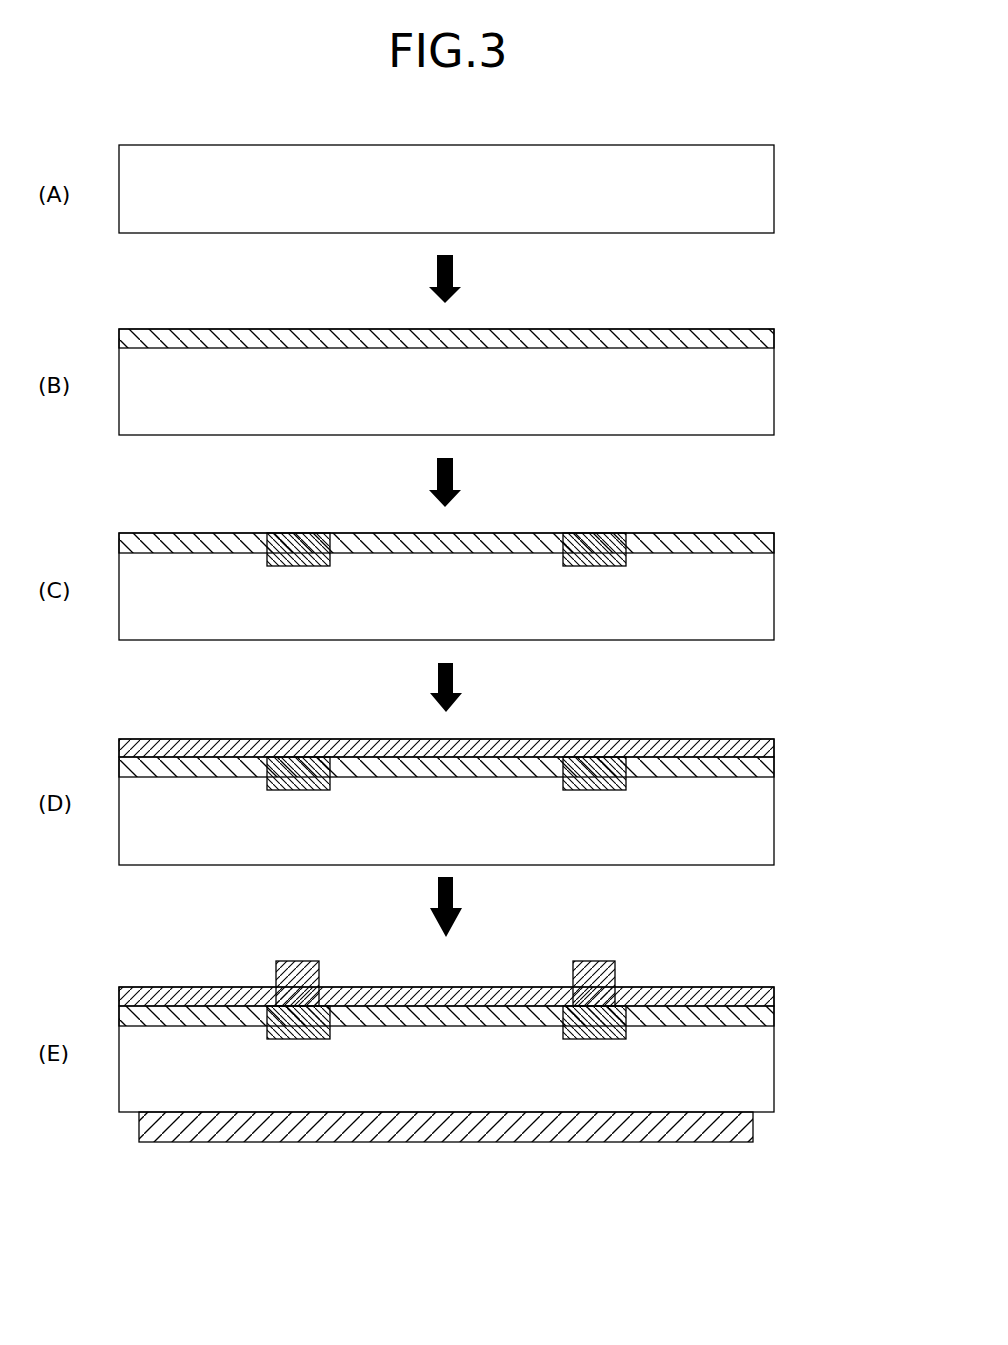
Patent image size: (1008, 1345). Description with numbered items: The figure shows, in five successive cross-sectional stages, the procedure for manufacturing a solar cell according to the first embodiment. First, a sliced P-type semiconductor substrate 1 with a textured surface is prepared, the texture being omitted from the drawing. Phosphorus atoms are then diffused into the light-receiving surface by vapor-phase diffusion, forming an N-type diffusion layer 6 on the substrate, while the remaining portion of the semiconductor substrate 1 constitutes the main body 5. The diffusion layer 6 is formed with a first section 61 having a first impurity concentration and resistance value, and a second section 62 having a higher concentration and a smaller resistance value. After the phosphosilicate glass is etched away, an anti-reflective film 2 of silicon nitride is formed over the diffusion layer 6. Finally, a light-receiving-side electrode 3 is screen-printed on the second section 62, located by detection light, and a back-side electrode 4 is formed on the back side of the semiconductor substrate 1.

The semiconductor substrate 1 is at (767, 183).
The anti-reflective film 2 is at (509, 745).
The light-receiving-side electrode 3 is at (297, 963).
The back-side electrode 4 is at (512, 1145).
The main body 5 is at (767, 383).
The diffusion layer 6 is at (767, 343).
The first section 61 is at (768, 540).
The second section 62 is at (598, 546).